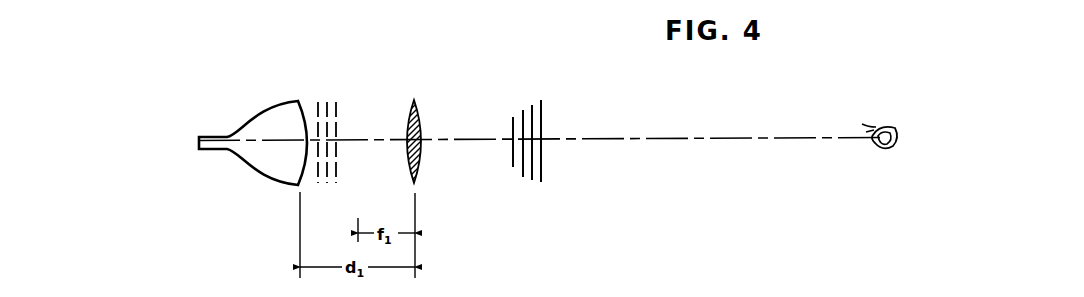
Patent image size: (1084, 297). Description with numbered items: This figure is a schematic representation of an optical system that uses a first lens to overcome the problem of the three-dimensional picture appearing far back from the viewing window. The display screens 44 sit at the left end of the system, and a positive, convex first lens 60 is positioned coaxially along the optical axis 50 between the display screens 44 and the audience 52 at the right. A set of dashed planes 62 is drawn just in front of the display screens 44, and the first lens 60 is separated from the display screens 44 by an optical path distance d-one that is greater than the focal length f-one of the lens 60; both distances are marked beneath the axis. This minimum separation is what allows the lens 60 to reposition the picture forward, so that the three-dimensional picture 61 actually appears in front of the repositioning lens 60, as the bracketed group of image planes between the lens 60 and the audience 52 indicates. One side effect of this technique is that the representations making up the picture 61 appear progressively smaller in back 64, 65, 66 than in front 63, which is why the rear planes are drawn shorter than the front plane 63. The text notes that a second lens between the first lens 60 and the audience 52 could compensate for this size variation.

The display screens 44 is at (262, 158).
The optical axis 50 is at (680, 138).
The audience 52 is at (878, 152).
The first lens 60 is at (417, 113).
The three-dimensional picture 61 is at (553, 89).
The grid 62 is at (352, 90).
The front representation 63 is at (541, 181).
The back representation 64 is at (532, 179).
The back representation 65 is at (522, 170).
The back representation 66 is at (513, 155).